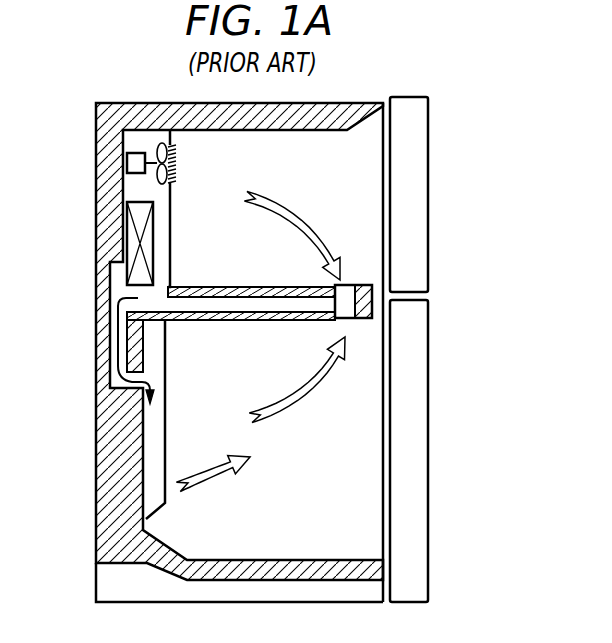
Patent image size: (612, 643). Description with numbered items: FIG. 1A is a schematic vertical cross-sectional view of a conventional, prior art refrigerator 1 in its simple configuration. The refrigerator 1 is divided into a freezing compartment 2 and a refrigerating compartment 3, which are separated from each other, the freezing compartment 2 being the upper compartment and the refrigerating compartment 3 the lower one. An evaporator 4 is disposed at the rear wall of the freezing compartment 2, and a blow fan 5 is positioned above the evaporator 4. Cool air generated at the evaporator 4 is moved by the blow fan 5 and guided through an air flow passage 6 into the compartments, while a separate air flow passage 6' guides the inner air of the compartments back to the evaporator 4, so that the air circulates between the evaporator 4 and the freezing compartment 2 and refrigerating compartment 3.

The refrigerator 1 is at (439, 120).
The freezing compartment 2 is at (374, 211).
The refrigerating compartment 3 is at (376, 463).
The evaporator 4 is at (132, 243).
The blow fan 5 is at (127, 162).
The air flow passage 6 is at (192, 345).
The air flow passage 6' is at (410, 327).